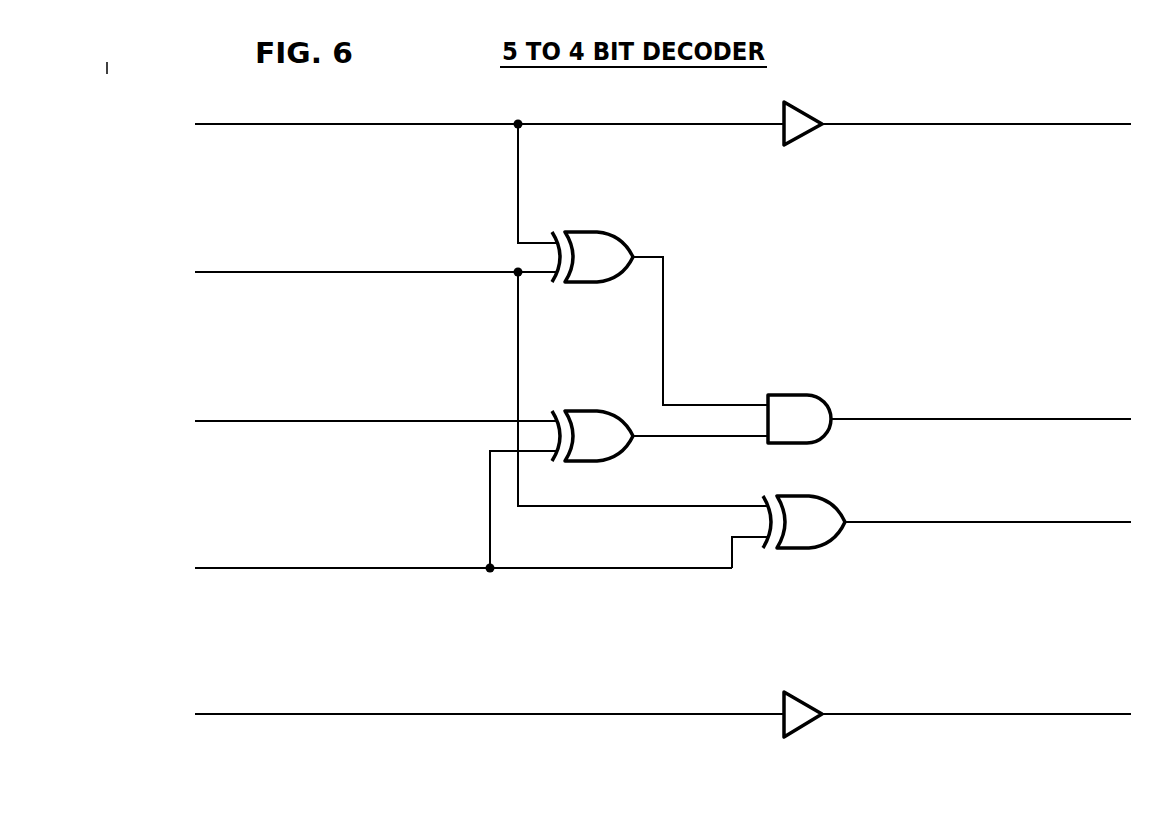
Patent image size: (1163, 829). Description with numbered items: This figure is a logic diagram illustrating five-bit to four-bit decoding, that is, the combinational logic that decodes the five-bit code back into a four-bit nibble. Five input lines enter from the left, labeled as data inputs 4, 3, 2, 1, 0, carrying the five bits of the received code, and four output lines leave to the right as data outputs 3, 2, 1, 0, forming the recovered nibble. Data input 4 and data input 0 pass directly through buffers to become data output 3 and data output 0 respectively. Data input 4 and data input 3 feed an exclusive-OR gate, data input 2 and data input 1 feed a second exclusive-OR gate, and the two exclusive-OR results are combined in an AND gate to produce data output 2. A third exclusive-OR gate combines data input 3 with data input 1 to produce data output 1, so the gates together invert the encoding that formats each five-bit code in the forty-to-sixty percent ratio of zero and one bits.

The DATAIN 4 input signal line 4 is at (489, 170).
The DATAIN 3 input / DATAOUT 3 output signal lines 3 is at (663, 301).
The DATAIN 2 input / DATAOUT 2 output signal lines 2 is at (663, 407).
The DATAIN 1 input / DATAOUT 1 output signal lines 1 is at (663, 512).
The DATAIN 0 input / DATAOUT 0 output signal lines 0 is at (663, 712).